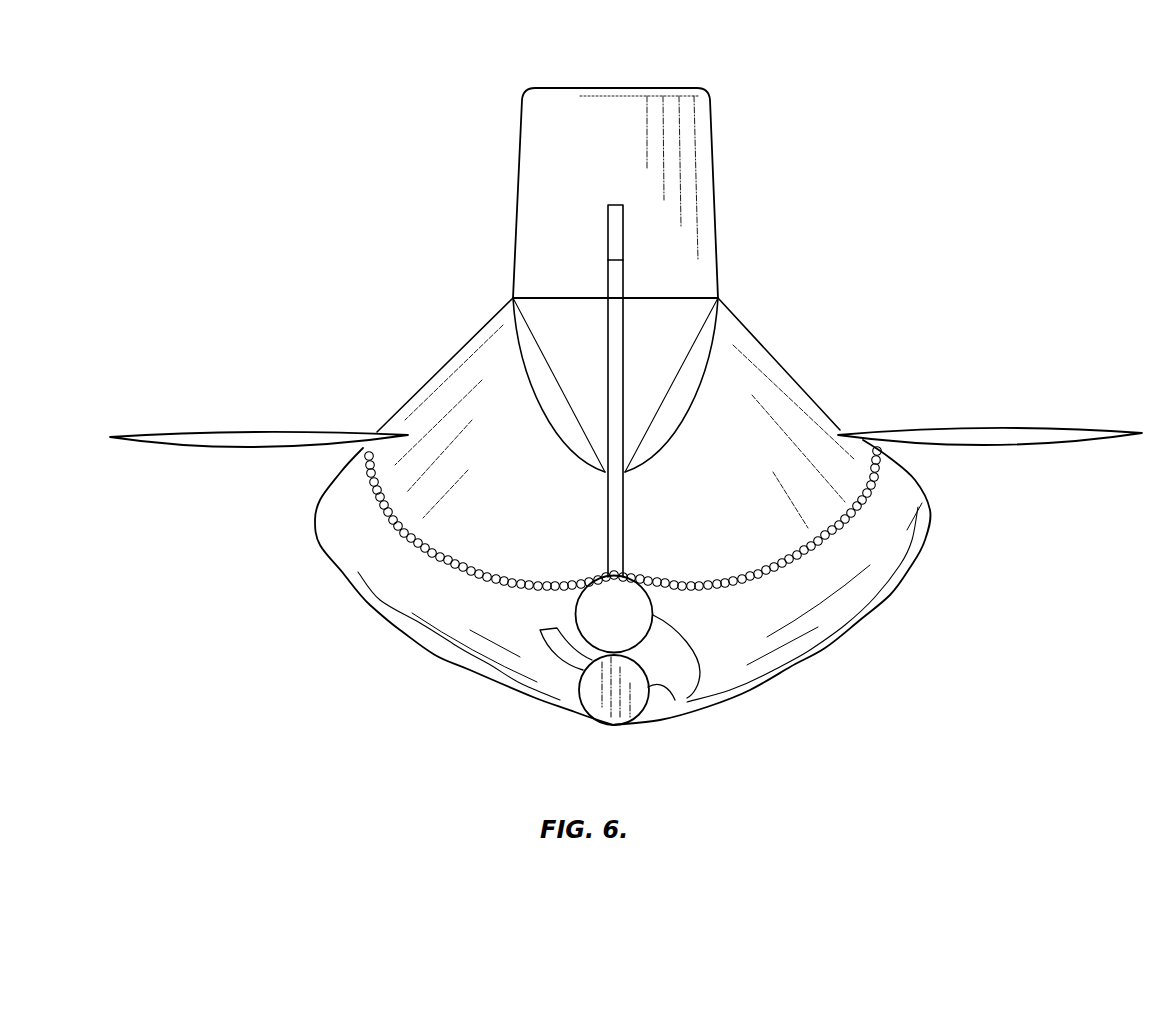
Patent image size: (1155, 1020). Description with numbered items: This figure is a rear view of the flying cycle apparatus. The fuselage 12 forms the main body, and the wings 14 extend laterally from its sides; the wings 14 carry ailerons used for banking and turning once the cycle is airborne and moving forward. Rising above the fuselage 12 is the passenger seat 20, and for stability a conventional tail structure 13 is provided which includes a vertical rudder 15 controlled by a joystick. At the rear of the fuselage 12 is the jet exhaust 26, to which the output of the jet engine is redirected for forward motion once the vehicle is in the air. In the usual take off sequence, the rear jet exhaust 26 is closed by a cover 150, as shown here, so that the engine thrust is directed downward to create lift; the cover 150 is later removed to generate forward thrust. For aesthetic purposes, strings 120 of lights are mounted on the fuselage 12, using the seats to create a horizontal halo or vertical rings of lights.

The fuselage 12 is at (777, 352).
The tail structure 13 is at (627, 243).
The wings 14 is at (240, 430).
The vertical rudder 15 is at (618, 325).
The passenger seat 20 is at (572, 178).
The jet exhaust 26 is at (655, 617).
The strings of lights 120 is at (673, 577).
The cover 150 is at (648, 687).